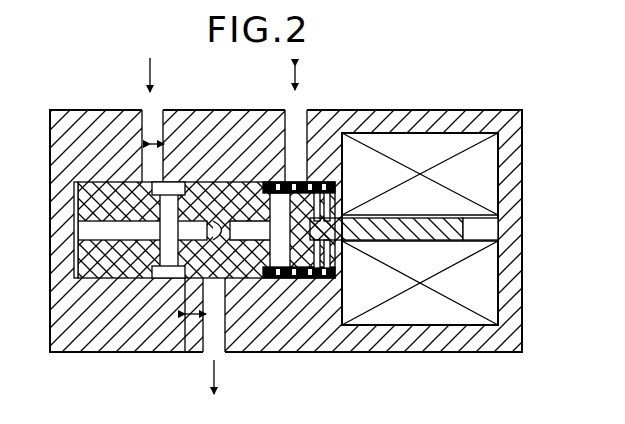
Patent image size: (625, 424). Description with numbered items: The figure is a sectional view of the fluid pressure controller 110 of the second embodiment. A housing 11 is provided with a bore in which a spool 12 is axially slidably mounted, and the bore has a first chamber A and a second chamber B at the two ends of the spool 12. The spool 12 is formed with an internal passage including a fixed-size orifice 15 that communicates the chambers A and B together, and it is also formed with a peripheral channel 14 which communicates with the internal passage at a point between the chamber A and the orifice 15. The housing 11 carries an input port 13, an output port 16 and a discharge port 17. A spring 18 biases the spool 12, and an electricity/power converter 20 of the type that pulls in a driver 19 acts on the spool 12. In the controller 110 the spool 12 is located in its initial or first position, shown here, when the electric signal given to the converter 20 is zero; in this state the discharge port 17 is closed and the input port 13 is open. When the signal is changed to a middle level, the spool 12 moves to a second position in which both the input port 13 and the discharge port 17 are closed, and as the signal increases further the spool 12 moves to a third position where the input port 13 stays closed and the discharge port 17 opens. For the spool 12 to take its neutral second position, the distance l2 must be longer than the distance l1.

The housing 11 is at (117, 328).
The fluid pressure controller 110 is at (476, 108).
The spool 12 is at (94, 183).
The input port 13 is at (142, 137).
The peripheral channel 14 is at (184, 181).
The fixed-size orifice 15 is at (230, 242).
The output port 16 is at (308, 110).
The discharge port 17 is at (218, 330).
The spring 18 is at (338, 264).
The driver 19 is at (428, 216).
The electricity/power converter 20 is at (367, 155).
The first chamber A is at (77, 280).
The second chamber B is at (300, 262).
The distance l1 is at (160, 140).
The distance l2 is at (196, 318).